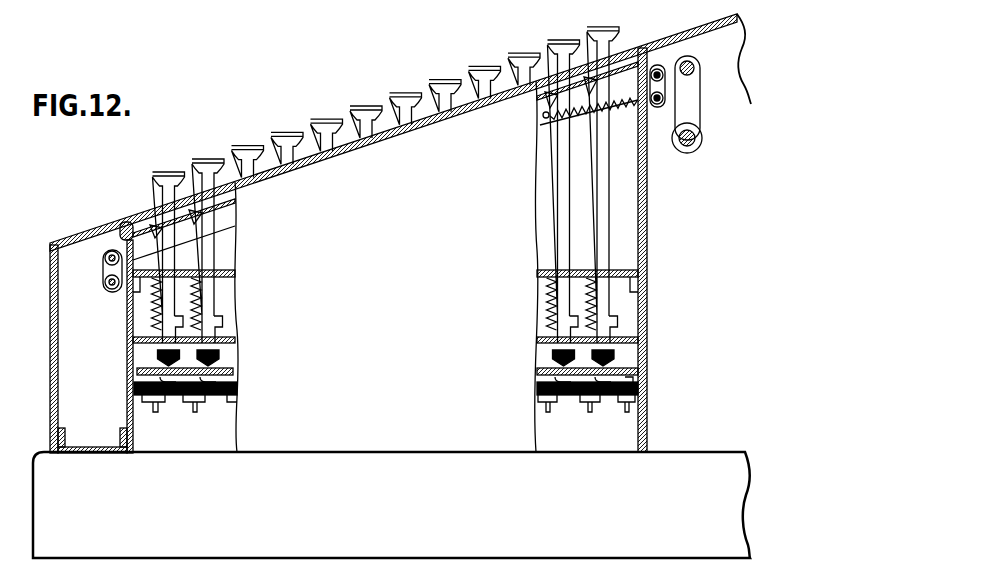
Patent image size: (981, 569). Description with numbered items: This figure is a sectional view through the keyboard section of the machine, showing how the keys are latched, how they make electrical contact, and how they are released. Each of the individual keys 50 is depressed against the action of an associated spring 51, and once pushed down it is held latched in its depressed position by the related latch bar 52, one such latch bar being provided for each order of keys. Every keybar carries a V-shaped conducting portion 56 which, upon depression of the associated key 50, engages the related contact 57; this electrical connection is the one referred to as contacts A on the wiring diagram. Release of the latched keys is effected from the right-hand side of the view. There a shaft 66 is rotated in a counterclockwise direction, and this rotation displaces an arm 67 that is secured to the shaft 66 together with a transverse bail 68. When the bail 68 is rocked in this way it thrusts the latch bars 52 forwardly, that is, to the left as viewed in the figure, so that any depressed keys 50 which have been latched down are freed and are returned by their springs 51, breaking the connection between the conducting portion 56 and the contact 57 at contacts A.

The keys 50 is at (245, 146).
The springs 51 is at (592, 290).
The latch bars 52 is at (618, 85).
The V-shaped conducting portion 56 is at (615, 356).
The contact 57 is at (570, 395).
The shaft 66 is at (690, 148).
The arm 67 is at (690, 98).
The transverse bail 68 is at (688, 68).
The contacts A is at (617, 373).